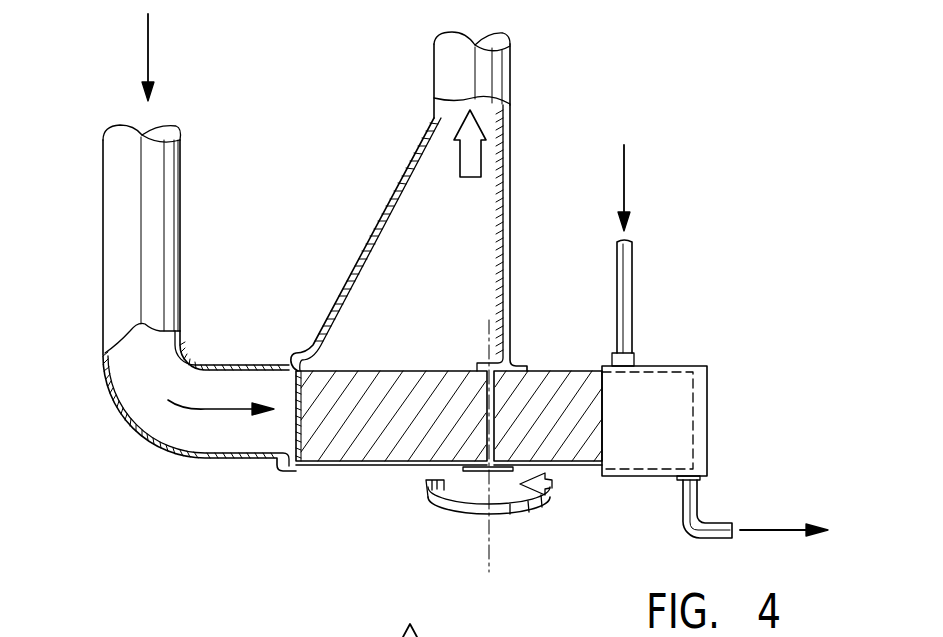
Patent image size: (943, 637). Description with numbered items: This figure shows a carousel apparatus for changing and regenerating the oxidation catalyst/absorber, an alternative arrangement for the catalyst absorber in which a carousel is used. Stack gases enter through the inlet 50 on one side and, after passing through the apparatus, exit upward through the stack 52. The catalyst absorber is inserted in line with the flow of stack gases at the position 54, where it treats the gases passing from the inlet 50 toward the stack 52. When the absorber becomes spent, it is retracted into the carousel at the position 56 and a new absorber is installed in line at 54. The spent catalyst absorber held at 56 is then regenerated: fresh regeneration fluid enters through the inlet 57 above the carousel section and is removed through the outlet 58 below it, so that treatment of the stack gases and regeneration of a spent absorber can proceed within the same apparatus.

The inlet 50 is at (103, 193).
The stack 52 is at (510, 80).
The catalyst absorber in-line position 54 is at (385, 440).
The carousel regeneration position 56 is at (553, 405).
The inlet 57 is at (632, 282).
The outlet 58 is at (697, 500).